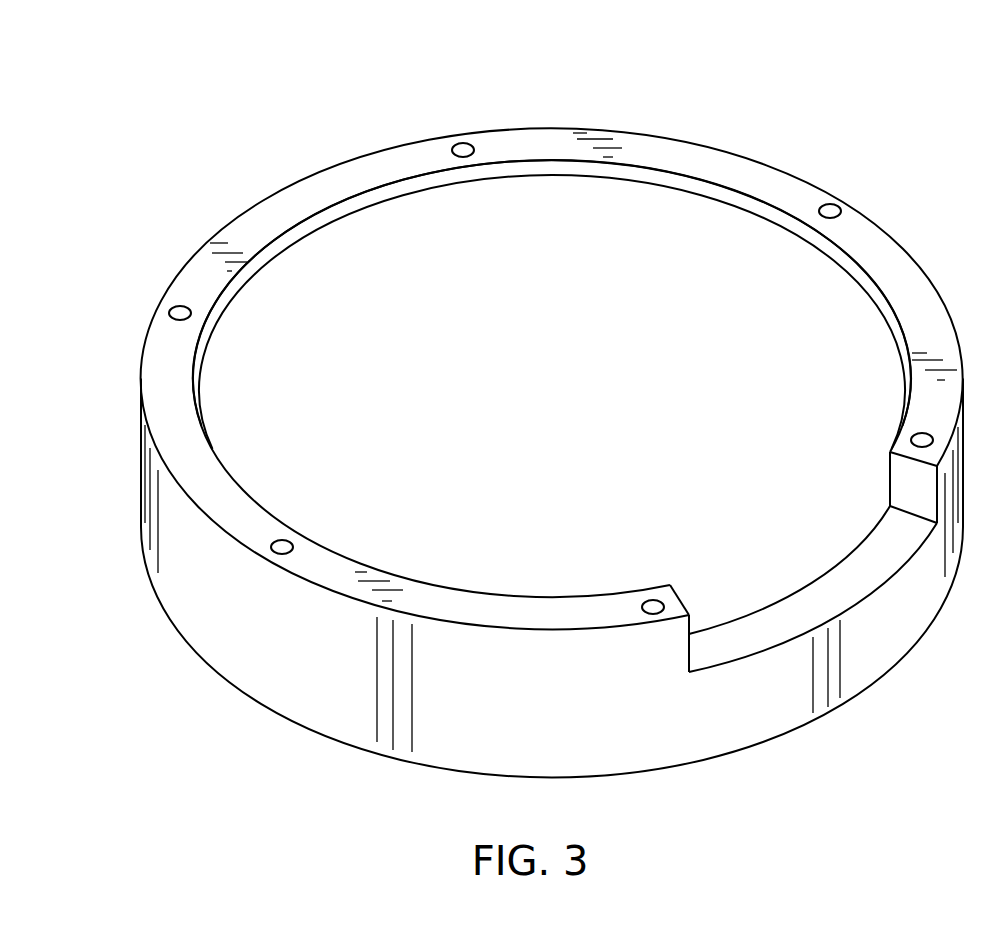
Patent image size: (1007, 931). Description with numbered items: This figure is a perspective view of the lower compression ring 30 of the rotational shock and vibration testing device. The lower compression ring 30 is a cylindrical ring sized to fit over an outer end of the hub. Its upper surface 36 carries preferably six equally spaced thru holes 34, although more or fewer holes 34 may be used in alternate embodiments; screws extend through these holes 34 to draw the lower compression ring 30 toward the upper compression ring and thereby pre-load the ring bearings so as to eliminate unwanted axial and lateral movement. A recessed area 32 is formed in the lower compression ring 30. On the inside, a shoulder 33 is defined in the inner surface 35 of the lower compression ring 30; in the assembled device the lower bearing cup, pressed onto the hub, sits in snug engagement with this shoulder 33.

The lower compression ring 30 is at (117, 137).
The recessed area 32 is at (747, 647).
The shoulder 33 is at (745, 289).
The thru holes 34 is at (475, 147).
The inner surface 35 is at (327, 253).
The upper surface 36 is at (352, 178).